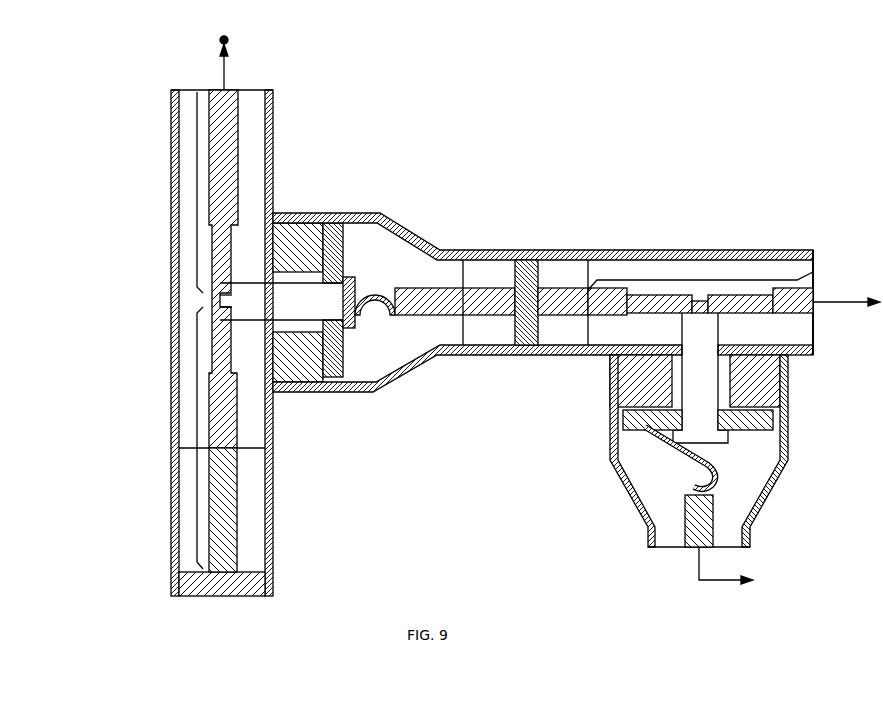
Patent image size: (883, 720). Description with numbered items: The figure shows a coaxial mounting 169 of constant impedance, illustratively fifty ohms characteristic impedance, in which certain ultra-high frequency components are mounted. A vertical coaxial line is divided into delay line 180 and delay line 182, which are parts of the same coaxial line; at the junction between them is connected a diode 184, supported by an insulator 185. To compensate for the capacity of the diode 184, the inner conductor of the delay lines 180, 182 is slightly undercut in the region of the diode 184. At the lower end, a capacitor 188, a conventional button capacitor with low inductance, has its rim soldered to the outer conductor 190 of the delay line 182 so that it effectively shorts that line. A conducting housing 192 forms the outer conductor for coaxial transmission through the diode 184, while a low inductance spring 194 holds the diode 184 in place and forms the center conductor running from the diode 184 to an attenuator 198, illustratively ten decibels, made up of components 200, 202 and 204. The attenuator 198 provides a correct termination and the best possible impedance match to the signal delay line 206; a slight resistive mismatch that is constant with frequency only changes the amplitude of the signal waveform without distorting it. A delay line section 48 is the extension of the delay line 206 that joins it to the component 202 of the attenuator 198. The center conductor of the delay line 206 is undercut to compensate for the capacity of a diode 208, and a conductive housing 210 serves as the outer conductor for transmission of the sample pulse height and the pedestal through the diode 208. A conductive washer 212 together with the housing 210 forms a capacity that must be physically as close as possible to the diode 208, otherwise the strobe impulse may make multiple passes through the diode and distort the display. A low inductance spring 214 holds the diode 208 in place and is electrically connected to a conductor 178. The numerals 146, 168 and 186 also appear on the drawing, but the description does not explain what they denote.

The delay line section 48 is at (680, 318).
The pilot pressure signal 146 is at (231, 40).
The fluid outlet flow 168 is at (848, 300).
The coaxial mounting 169 is at (541, 379).
The conductor 178 is at (712, 580).
The delay line 180 is at (197, 196).
The delay line 182 is at (197, 439).
The diode 184 is at (293, 309).
The insulator 185 is at (343, 345).
The body shoulder 186 is at (234, 237).
The capacitor 188 is at (179, 602).
The outer conductor 190 is at (274, 481).
The conducting housing 192 is at (300, 392).
The low inductance spring 194 is at (383, 281).
The attenuator 198 is at (551, 280).
The attenuator component 200 is at (515, 318).
The attenuator component 202 is at (545, 316).
The attenuator component 204 is at (540, 276).
The signal delay line 206 is at (700, 280).
The diode 208 is at (714, 350).
The conductive housing 210 is at (788, 374).
The conductive washer 212 is at (763, 430).
The low inductance spring 214 is at (674, 458).